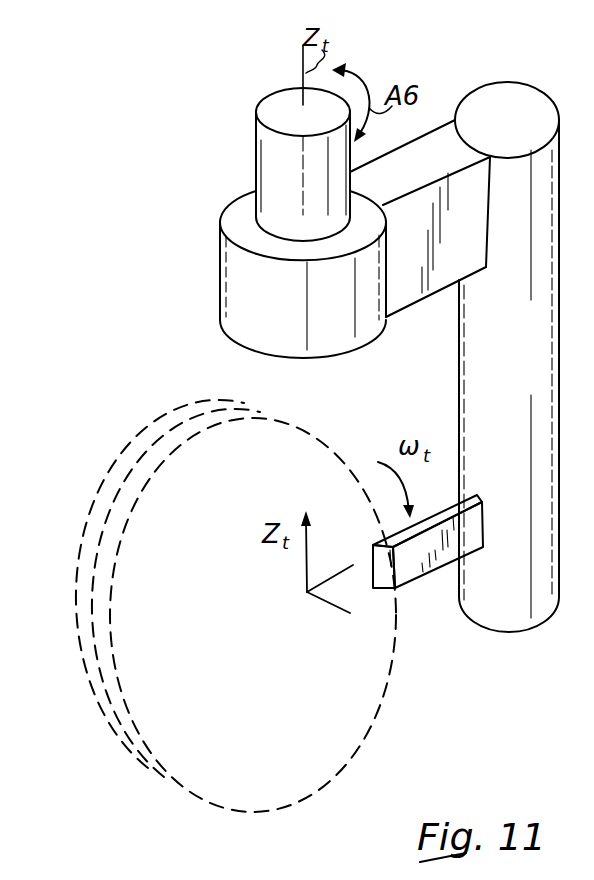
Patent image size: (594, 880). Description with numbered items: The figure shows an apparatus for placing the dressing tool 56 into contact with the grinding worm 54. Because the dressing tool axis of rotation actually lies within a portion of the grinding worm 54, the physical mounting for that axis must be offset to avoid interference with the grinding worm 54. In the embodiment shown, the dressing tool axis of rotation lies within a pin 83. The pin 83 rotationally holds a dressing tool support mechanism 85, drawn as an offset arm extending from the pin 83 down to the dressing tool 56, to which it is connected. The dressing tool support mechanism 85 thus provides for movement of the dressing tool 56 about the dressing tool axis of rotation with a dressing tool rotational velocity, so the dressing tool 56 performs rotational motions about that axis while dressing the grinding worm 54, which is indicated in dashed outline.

The pin 83 is at (256, 152).
The dressing tool support mechanism 85 is at (513, 385).
The grinding worm 54 is at (184, 670).
The dressing tool 56 is at (427, 573).